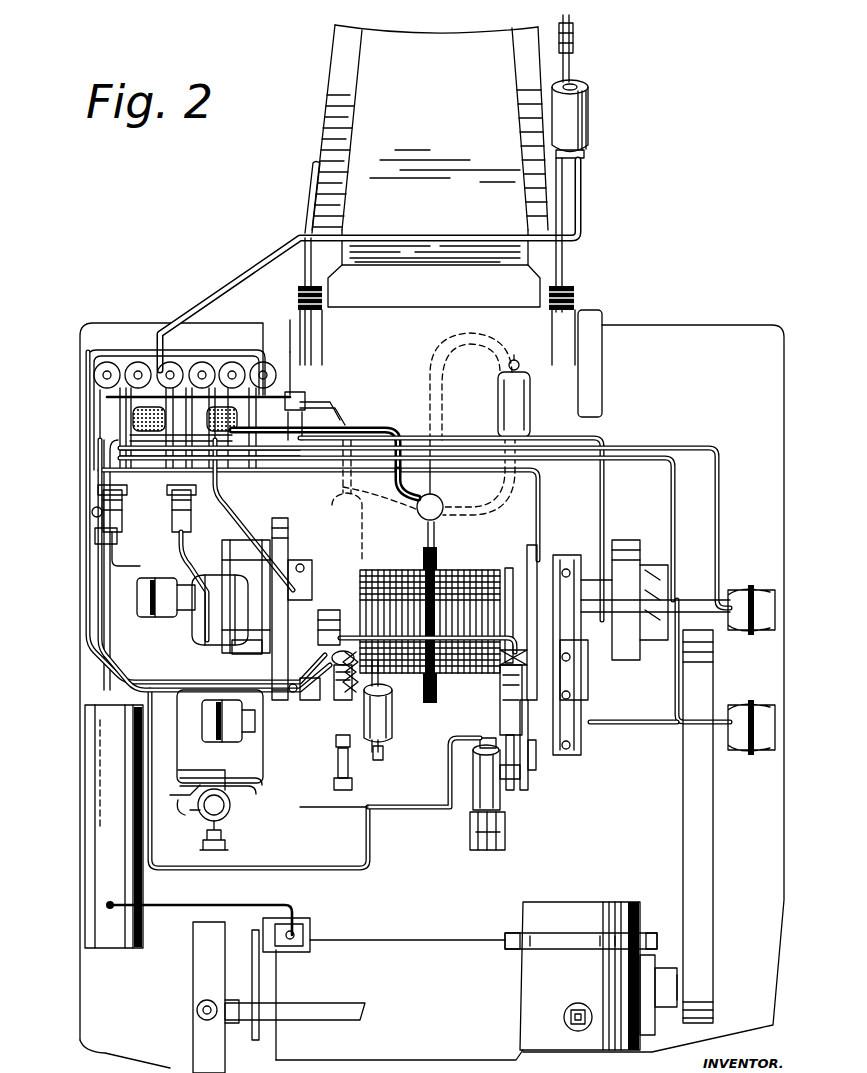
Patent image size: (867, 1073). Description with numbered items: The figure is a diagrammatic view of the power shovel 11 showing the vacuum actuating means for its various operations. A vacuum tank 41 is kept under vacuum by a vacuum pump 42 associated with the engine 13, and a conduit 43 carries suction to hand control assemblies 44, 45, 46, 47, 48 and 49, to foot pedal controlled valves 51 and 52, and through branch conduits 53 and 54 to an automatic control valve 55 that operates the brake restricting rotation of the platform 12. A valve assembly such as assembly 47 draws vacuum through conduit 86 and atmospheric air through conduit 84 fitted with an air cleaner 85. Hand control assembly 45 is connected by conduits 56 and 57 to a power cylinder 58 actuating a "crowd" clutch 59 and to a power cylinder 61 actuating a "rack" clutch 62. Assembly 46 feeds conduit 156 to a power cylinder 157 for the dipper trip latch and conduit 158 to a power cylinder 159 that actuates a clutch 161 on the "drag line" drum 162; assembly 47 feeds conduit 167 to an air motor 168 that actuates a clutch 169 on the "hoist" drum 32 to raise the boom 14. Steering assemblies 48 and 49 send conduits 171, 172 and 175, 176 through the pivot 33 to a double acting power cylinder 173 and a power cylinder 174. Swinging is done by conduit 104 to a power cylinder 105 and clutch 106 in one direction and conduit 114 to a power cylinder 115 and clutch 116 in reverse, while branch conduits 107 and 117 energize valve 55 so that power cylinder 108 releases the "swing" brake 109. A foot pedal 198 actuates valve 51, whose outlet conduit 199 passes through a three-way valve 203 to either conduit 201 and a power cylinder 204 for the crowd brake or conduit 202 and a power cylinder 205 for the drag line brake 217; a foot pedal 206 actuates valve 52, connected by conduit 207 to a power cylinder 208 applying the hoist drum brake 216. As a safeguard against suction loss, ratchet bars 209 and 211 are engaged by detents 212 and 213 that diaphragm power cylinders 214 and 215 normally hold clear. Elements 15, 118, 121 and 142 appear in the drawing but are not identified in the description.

The power shovel 11 is at (646, 241).
The platform 12 is at (690, 345).
The engine 13 is at (410, 1042).
The boom 14 is at (446, 60).
The support brackets 15 is at (324, 300).
The "hoist" drum 32 is at (420, 568).
The pivot 33 is at (442, 501).
The vacuum tank 41 is at (108, 925).
The vacuum pump 42 is at (305, 932).
The conduit 43 is at (102, 657).
The control assembly 44 is at (112, 362).
The hand control assembly 45 is at (146, 362).
The hand control valve assembly 46 is at (176, 362).
The hand control valve assembly 47 is at (212, 362).
The hand control valve assembly 48 is at (243, 362).
The hand control valve assembly 49 is at (290, 330).
The foot pedal controlled valve 51 is at (103, 495).
The foot pedal controlled valve 52 is at (178, 503).
The branch conduit 53 is at (225, 772).
The branch conduit 54 is at (196, 812).
The automatic control valve 55 is at (226, 815).
The conduit 56 is at (162, 578).
The conduit 57 is at (718, 480).
The "crowd" clutch power cylinder 58 is at (165, 622).
The "crowd" clutch 59 is at (248, 540).
The power cylinder 61 is at (764, 594).
The "rack" clutch 62 is at (645, 562).
The conduit 84 is at (105, 398).
The air cleaner 85 is at (305, 411).
The conduit 86 is at (90, 350).
The conduit 104 is at (88, 410).
The power cylinder 105 is at (226, 742).
The clutch 106 is at (340, 745).
The branch conduit 107 is at (260, 778).
The power cylinder 108 is at (473, 770).
The "swing" brake 109 is at (478, 838).
The conduit 114 is at (118, 445).
The power cylinder 115 is at (772, 720).
The clutch 116 is at (520, 770).
The branch conduit 117 is at (180, 650).
The pipe 118 is at (256, 790).
The pipe 121 is at (185, 800).
The pipe 142 is at (322, 810).
The conduit 156 is at (575, 186).
The power cylinder 157 is at (598, 130).
The conduit 158 is at (604, 472).
The power cylinder 159 is at (652, 662).
The clutch 161 is at (526, 565).
The "drag line" drum 162 is at (498, 573).
The conduit 167 is at (220, 506).
The power cylinder or air motor 168 is at (268, 605).
The clutch 169 is at (320, 572).
The conduit 171 is at (305, 408).
The conduit 172 is at (305, 402).
The double acting power cylinder 173 is at (352, 530).
The power cylinder 174 is at (498, 387).
The conduit 175 is at (292, 396).
The conduit 176 is at (298, 380).
The foot pedal 198 is at (135, 420).
The outlet conduit 199 is at (100, 530).
The conduit 201 is at (100, 622).
The conduit 202 is at (100, 470).
The three-way valve 203 is at (92, 516).
The power cylinder 204 is at (394, 730).
The power cylinder 205 is at (500, 696).
The foot pedal 206 is at (228, 445).
The conduit 207 is at (334, 668).
The power cylinder 208 is at (298, 688).
The bar 209 is at (338, 762).
The bar 211 is at (528, 788).
The detent 212 is at (376, 752).
The detent 213 is at (490, 738).
The diaphragm power cylinder 214 is at (352, 625).
The diaphragm power cylinder 215 is at (528, 623).
The brake 216 is at (334, 786).
The brake 217 is at (532, 800).